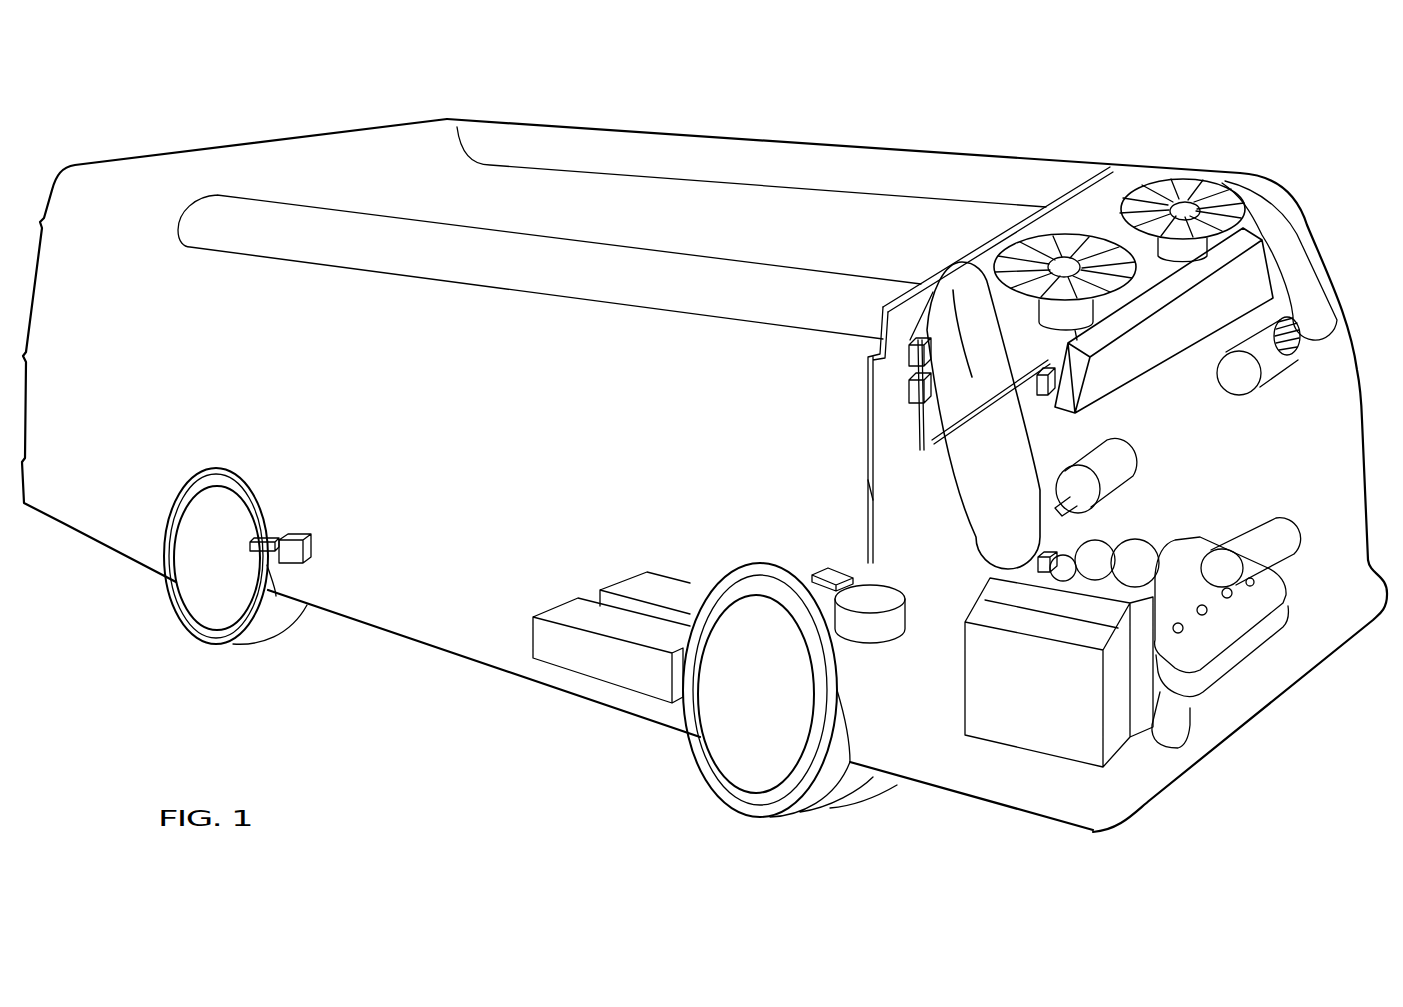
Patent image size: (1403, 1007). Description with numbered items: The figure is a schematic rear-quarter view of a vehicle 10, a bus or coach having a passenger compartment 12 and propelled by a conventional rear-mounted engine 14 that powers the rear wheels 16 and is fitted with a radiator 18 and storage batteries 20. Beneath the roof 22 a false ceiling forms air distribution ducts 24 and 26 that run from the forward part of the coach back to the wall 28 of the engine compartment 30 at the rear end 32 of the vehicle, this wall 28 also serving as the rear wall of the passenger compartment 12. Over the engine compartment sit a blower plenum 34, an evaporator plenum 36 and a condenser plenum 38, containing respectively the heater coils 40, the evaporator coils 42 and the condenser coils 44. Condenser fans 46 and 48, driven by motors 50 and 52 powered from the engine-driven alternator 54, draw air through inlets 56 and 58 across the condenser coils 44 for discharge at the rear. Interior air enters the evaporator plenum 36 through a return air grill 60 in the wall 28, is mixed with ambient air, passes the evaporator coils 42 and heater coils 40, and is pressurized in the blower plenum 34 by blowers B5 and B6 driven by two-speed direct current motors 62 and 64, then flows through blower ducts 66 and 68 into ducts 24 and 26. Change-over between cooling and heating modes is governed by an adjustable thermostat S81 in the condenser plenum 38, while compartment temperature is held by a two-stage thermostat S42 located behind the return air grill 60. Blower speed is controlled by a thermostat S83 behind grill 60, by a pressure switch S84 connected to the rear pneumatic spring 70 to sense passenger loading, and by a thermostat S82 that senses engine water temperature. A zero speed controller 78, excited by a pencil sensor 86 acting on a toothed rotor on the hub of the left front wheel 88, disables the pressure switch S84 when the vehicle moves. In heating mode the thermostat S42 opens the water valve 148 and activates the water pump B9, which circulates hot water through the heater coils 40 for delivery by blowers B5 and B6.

The vehicle 10 is at (245, 133).
The passenger compartment 12 is at (442, 371).
The engine 14 is at (1268, 628).
The rear wheels 16 is at (726, 790).
The radiator 18 is at (968, 722).
The storage batteries 20 is at (570, 605).
The roof 22 is at (452, 118).
The air distribution duct 24 is at (458, 222).
The air distribution duct 26 is at (603, 176).
The wall of engine compartment 28 is at (866, 495).
The engine compartment 30 is at (1340, 557).
The rear end of vehicle 32 is at (1363, 425).
The blower compartment or plenum 34 is at (1191, 437).
The evaporator plenum 36 is at (927, 482).
The condenser plenum 38 is at (1162, 281).
The heater coils 40 is at (1233, 333).
The evaporator coils 42 is at (1037, 415).
The condenser coils 44 is at (1152, 355).
The condenser fan 46 is at (1006, 266).
The condenser fan 48 is at (1170, 187).
The motor 50 is at (1040, 312).
The motor 52 is at (1190, 254).
The engine-driven alternator 54 is at (1272, 520).
The inlet 56 is at (1072, 246).
The inlet 58 is at (1232, 190).
The return air grill 60 is at (982, 287).
The motor 62 is at (1130, 478).
The motor 64 is at (1258, 385).
The blower duct 66 is at (957, 503).
The blower duct 68 is at (1296, 242).
The rear pneumatic spring 70 is at (906, 597).
The zero speed controller 78 is at (313, 545).
The pencil sensor 86 is at (266, 540).
The left front wheel 88 is at (190, 603).
The water valve 148 is at (1088, 545).
The blower B5 is at (977, 538).
The blower B6 is at (1298, 355).
The water pump B9 is at (1140, 546).
The two-stage dual-switching single-element thermostat S42 is at (926, 394).
The adjustable thermostat S81 is at (1046, 366).
The thermostat S82 is at (1044, 554).
The thermostat S83 is at (926, 350).
The pressure switch S84 is at (836, 567).